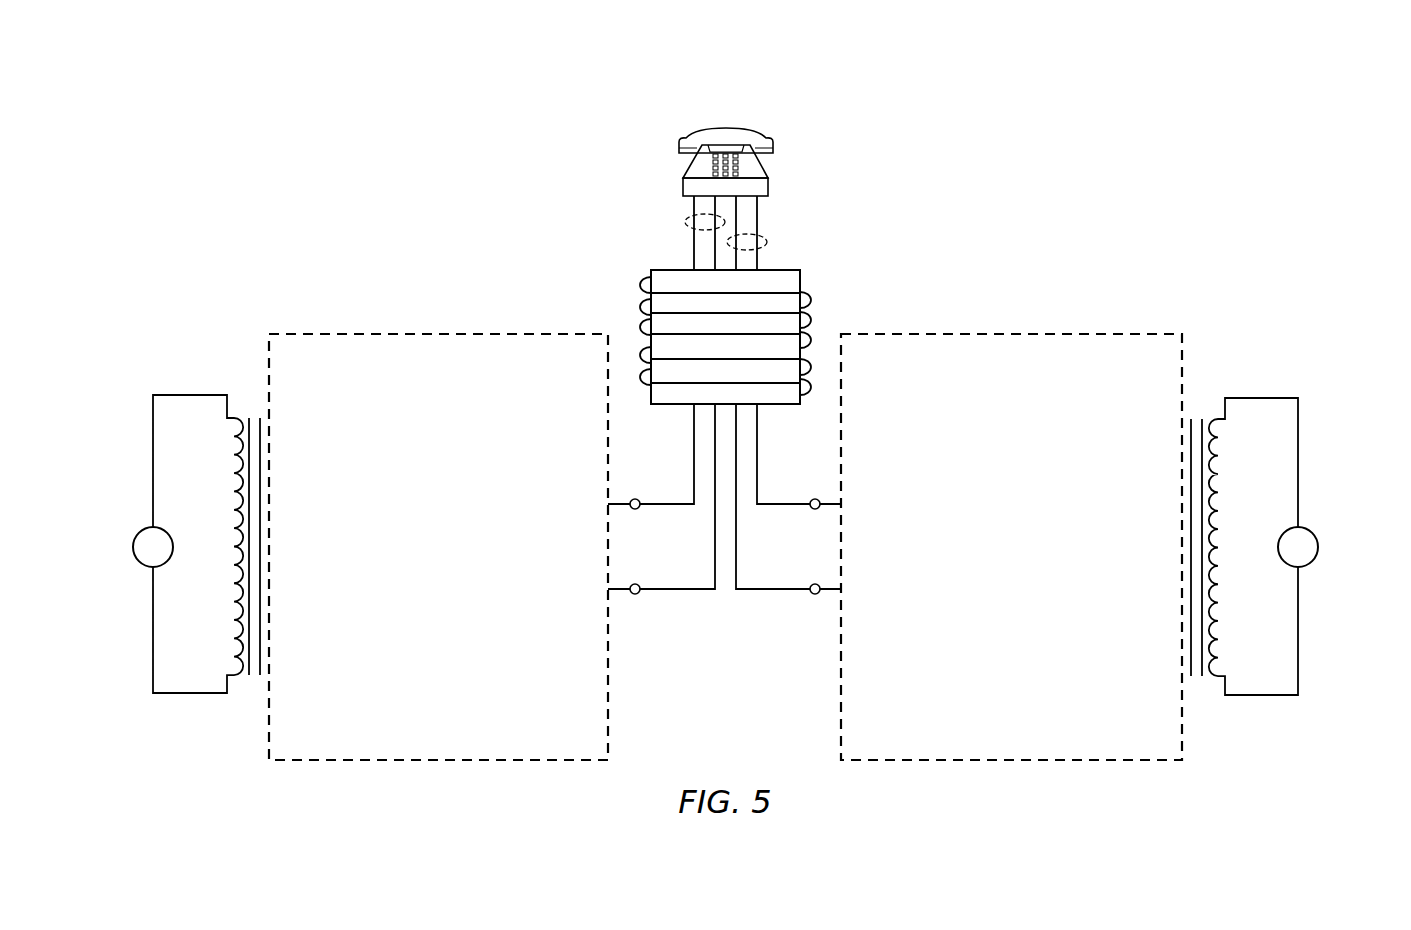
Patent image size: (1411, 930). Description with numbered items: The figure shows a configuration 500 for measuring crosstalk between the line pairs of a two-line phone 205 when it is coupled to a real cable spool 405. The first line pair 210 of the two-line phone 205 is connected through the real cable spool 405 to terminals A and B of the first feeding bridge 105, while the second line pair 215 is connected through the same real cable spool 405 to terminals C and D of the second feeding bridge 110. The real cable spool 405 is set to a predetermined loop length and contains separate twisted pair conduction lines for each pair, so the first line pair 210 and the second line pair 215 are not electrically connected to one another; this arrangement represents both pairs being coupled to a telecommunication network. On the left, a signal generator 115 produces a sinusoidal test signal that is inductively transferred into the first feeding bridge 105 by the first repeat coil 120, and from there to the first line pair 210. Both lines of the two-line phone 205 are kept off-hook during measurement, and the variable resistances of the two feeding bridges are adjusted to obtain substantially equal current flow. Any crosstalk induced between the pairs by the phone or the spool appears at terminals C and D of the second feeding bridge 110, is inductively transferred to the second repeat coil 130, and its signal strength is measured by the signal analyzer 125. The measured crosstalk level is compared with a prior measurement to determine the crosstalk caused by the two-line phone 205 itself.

The configuration 500 is at (408, 153).
The first feeding bridge 105 is at (425, 770).
The second feeding bridge 110 is at (1027, 770).
The signal generator 115 is at (134, 557).
The first repeat coil 120 is at (236, 457).
The signal analyzer 125 is at (1318, 557).
The second repeat coil 130 is at (1215, 460).
The two-line phone 205 is at (726, 128).
The first line pair 210 is at (687, 223).
The second line pair 215 is at (768, 244).
The real cable spool 405 is at (675, 405).